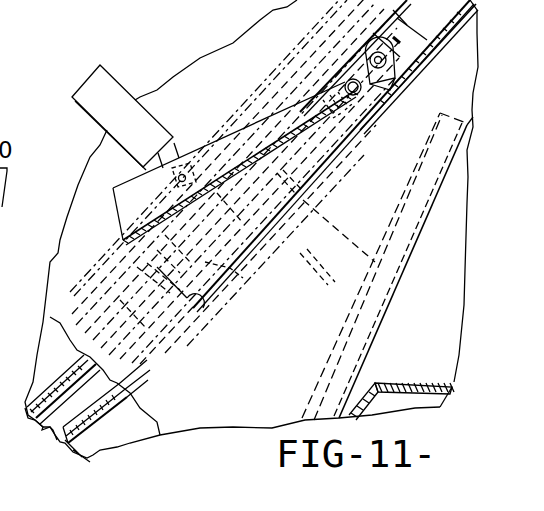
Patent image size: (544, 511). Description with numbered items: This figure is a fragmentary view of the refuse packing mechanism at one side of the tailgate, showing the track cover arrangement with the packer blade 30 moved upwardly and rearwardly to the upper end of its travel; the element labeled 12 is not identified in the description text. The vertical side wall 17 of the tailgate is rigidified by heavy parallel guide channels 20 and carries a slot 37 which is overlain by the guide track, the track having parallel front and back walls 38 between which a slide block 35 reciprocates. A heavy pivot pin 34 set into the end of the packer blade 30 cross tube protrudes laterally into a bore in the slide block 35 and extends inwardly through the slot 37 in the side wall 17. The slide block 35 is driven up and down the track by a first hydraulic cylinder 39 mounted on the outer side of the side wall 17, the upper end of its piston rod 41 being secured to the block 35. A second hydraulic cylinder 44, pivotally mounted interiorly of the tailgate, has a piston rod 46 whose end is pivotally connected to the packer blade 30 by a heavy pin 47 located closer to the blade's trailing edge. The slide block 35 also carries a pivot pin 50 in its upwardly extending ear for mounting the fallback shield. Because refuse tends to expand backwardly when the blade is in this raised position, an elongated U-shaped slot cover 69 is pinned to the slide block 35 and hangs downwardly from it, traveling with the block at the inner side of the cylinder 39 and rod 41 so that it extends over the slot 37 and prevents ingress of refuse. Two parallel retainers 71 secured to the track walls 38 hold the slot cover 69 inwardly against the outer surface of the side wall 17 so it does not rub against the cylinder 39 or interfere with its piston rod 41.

The channel 12 is at (373, 33).
The side wall 17 is at (254, 389).
The guide channel 20 is at (115, 248).
The packer blade 30 is at (240, 130).
The pivot pin 34 is at (348, 80).
The slide block 35 is at (384, 104).
The slot 37 is at (199, 307).
The front and back wall 38 is at (350, 150).
The hydraulic cylinder 39 is at (92, 458).
The piston rod 41 is at (297, 256).
The second hydraulic cylinder 44 is at (99, 68).
The piston rod 46 is at (235, 163).
The pin 47 is at (178, 180).
The pivot pin 50 is at (386, 63).
The slot cover 69 is at (267, 231).
The retainer 71 is at (62, 440).